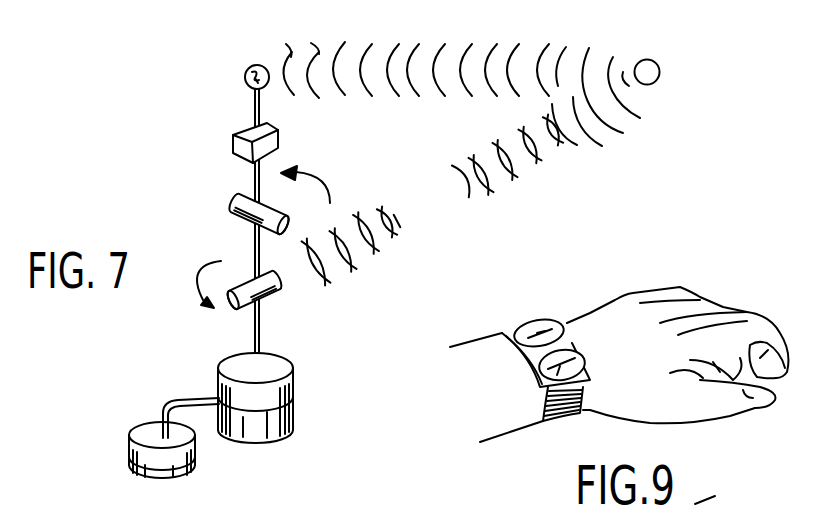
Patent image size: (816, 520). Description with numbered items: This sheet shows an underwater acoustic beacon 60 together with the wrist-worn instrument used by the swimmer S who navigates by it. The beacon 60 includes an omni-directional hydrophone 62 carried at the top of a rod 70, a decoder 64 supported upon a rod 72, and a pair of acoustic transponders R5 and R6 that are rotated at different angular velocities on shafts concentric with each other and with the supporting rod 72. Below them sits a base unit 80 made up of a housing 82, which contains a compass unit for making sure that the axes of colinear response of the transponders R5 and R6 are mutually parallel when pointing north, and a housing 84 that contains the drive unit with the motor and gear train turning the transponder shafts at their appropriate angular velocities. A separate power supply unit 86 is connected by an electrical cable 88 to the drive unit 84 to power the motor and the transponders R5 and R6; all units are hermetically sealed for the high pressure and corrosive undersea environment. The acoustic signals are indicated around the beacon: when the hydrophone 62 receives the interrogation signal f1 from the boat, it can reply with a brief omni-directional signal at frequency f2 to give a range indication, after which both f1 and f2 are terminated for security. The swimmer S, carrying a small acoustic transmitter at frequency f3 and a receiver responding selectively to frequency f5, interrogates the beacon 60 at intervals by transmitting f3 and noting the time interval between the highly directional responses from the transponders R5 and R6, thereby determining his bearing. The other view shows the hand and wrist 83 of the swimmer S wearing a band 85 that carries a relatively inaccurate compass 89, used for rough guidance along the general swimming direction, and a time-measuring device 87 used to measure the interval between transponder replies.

In FIG. 7, the underwater acoustic beacon 60 is at (274, 192).
In FIG. 7, the omni-directional hydrophone 62 is at (243, 56).
In FIG. 7, the decoder 64 is at (222, 149).
In FIG. 7, the rod 70 is at (219, 225).
In FIG. 7, the rod 72 is at (218, 189).
In FIG. 7, the acoustic transponder R6 is at (225, 214).
In FIG. 7, the acoustic transponder R5 is at (272, 307).
In FIG. 7, the base unit 80 is at (267, 397).
In FIG. 7, the housing 82 is at (235, 357).
In FIG. 7, the housing 84 is at (284, 415).
In FIG. 7, the power supply unit 86 is at (137, 470).
In FIG. 7, the electrical cable 88 is at (172, 404).
In FIG. 7, the interrogation signal f1 is at (500, 38).
In FIG. 7, the response signal f2 is at (405, 39).
In FIG. 7, the transmitter frequency f3 is at (457, 187).
In FIG. 7, the receiver frequency f5 is at (405, 250).
In FIG. 7, the swimmer S is at (647, 72).
In FIG. 9, the wrist 83 is at (619, 349).
In FIG. 9, the band 85 is at (528, 377).
In FIG. 9, the time-measuring device 87 is at (544, 310).
In FIG. 9, the compass 89 is at (589, 364).